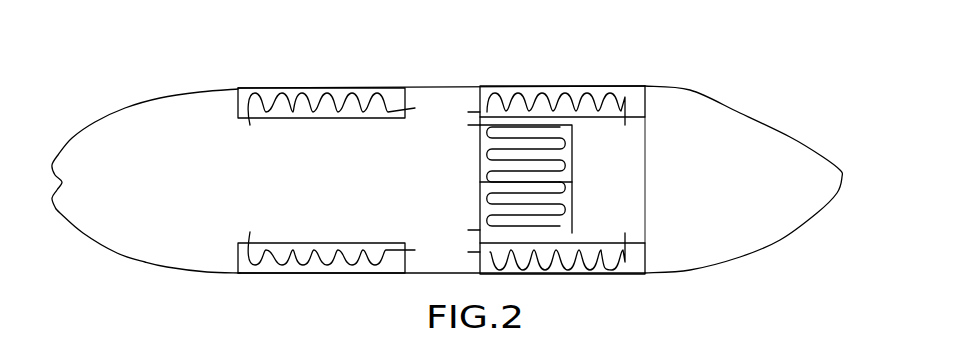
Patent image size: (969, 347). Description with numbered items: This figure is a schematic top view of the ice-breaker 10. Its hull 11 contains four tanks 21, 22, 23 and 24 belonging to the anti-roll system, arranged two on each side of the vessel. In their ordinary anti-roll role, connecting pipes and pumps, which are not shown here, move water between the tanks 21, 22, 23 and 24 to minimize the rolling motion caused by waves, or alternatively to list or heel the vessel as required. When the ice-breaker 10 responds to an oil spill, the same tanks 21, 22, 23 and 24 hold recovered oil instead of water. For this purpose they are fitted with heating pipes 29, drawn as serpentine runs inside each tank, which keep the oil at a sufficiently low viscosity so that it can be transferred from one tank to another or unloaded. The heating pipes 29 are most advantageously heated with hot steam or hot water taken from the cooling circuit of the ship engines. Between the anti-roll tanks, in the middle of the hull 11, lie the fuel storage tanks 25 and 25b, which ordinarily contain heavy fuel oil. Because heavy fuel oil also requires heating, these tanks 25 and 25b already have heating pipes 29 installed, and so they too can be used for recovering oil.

The ice-breaker 10 is at (742, 66).
The hull 11 is at (762, 228).
The tank 21 is at (312, 96).
The tank 22 is at (545, 90).
The tank 23 is at (607, 267).
The tank 24 is at (292, 265).
The fuel storage tank 25 is at (566, 152).
The fuel storage tank 25b is at (566, 214).
The heating pipes 29 is at (362, 95).